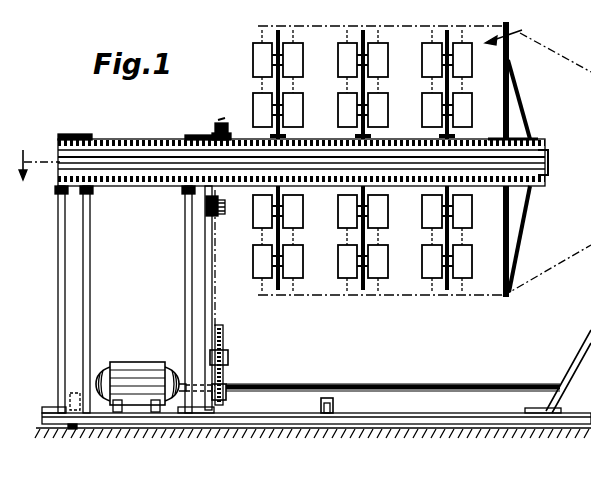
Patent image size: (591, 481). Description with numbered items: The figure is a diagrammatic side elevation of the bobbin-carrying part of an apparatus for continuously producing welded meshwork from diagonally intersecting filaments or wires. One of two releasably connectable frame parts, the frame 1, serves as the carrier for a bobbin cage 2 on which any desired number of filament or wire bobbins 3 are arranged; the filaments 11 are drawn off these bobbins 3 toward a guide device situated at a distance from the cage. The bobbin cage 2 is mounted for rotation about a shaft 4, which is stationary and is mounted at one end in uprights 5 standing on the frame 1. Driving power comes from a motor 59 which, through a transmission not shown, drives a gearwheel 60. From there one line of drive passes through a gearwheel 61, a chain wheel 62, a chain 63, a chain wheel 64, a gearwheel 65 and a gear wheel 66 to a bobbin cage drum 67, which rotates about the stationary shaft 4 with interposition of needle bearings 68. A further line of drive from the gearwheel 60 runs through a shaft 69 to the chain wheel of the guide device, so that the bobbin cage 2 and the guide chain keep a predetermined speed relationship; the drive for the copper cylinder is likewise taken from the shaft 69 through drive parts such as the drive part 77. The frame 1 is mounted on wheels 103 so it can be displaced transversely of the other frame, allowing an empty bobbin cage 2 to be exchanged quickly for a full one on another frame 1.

The frame 1 is at (386, 426).
The bobbin cage 2 is at (305, 101).
The filament or wire bobbins 3 is at (428, 52).
The shaft 4 is at (250, 156).
The uprights 5 is at (78, 292).
The filaments 11 is at (586, 231).
The motor 59 is at (137, 372).
The gearwheel 60 is at (226, 394).
The gearwheel 61 is at (228, 359).
The chain wheel 62 is at (223, 346).
The chain 63 is at (215, 296).
The chain wheel 64 is at (206, 206).
The gearwheel 65 is at (222, 215).
The gear wheel 66 is at (215, 130).
The bobbin cage drum 67 is at (236, 136).
The needle bearings 68 is at (546, 153).
The shaft 69 is at (410, 383).
The drive part 77 is at (590, 316).
The wheels 103 is at (76, 430).